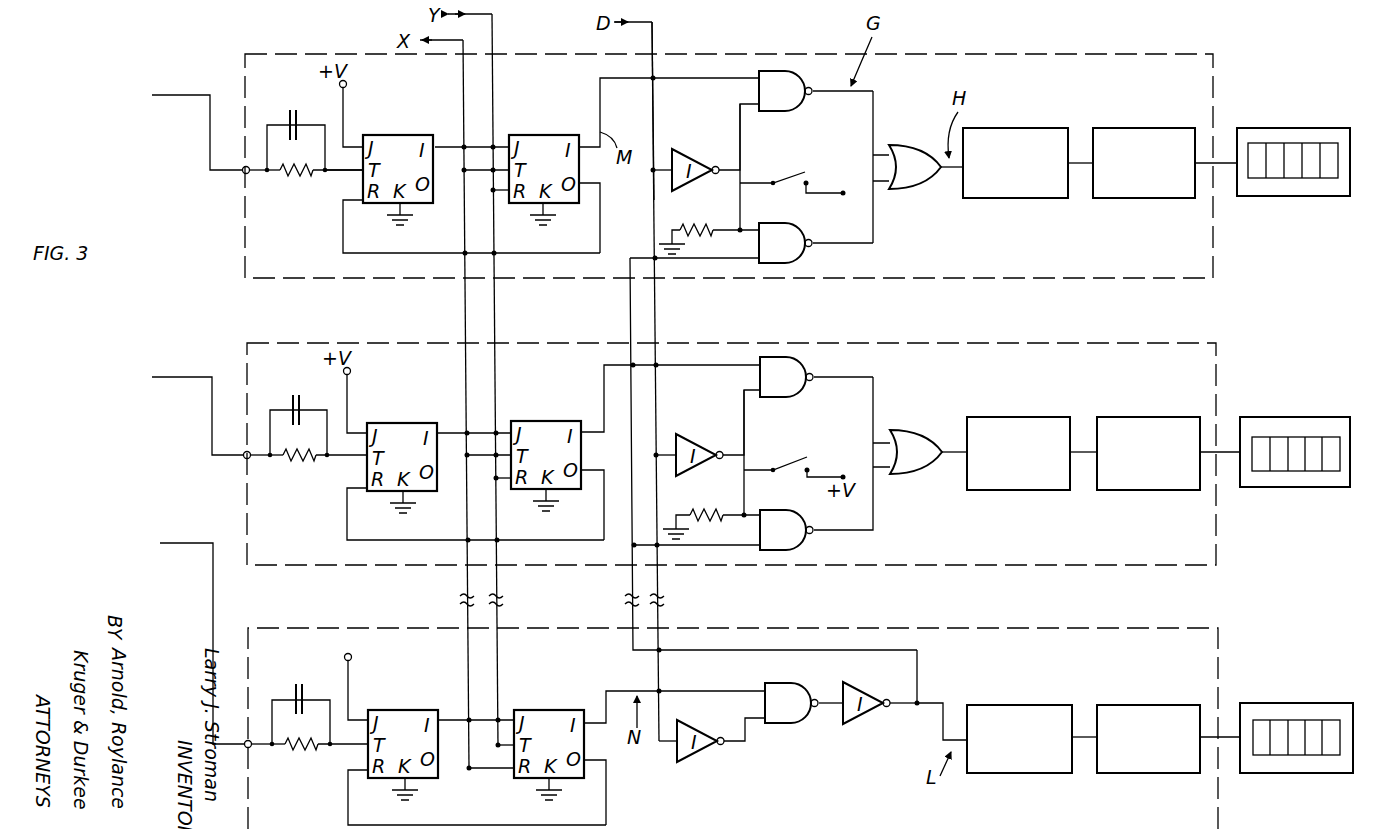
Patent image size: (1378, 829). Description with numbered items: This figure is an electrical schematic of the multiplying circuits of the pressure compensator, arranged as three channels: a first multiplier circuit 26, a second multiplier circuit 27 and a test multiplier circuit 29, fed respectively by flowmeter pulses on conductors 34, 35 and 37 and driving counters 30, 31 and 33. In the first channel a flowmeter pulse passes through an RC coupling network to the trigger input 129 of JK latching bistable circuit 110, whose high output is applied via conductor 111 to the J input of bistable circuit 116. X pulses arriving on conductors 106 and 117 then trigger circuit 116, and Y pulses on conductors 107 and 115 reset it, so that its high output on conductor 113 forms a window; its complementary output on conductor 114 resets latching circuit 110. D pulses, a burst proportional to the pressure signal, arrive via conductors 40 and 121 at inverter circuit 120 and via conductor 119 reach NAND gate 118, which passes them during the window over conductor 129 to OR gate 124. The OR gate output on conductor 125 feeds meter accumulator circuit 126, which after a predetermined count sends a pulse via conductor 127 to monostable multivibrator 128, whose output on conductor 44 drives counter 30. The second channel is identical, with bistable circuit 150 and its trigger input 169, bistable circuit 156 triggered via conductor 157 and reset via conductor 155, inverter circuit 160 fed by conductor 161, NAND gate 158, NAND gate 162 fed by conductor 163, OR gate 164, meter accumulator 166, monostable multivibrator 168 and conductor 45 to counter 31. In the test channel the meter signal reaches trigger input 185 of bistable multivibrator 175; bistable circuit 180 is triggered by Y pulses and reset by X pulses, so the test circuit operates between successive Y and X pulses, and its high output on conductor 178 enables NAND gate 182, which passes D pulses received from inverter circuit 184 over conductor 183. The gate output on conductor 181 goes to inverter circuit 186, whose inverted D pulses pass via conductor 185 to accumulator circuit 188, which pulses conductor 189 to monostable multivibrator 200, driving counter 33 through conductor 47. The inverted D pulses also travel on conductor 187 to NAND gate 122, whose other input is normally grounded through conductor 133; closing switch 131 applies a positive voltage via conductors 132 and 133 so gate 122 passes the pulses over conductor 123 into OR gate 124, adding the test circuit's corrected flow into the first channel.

The first multiplier circuit 26 is at (245, 244).
The second multiplier circuit 27 is at (247, 353).
The test multiplier circuit 29 is at (262, 628).
The counter 30 is at (1296, 127).
The counter 31 is at (1298, 415).
The counter 33 is at (1302, 702).
The conductor 34 is at (172, 95).
The conductor 35 is at (175, 377).
The conductor 37 is at (178, 543).
The conductor 40 is at (656, 46).
The conductor 44 is at (1227, 160).
The conductor 45 is at (1229, 450).
The conductor 47 is at (1228, 735).
The conductor 106 is at (464, 84).
The conductor 107 is at (493, 84).
The bistable circuit 110 is at (391, 133).
The conductor 111 is at (451, 145).
The conductor 113 is at (628, 80).
The conductor 114 is at (600, 226).
The conductor 115 is at (501, 193).
The bistable circuit 116 is at (544, 133).
The conductor 117 is at (479, 174).
The NAND gate 118 is at (804, 82).
The conductor 119 is at (741, 153).
The inverter circuit 120 is at (699, 154).
The conductor 121 is at (665, 170).
The NAND gate 122 is at (810, 258).
The conductor 123 is at (875, 236).
The OR gate 124 is at (908, 148).
The conductor 125 is at (951, 172).
The meter accumulator circuit 126 is at (1010, 127).
The conductor 127 is at (1084, 160).
The monostable multivibrator 128 is at (1136, 127).
The trigger input / conductor 129 is at (345, 172).
The switch 131 is at (795, 170).
The conductor 132 is at (827, 193).
The conductor 133 is at (726, 230).
The bistable circuit 150 is at (405, 421).
The conductor 155 is at (505, 482).
The bistable circuit 156 is at (545, 420).
The conductor 157 is at (481, 458).
The NAND gate 158 is at (808, 370).
The inverter circuit 160 is at (699, 439).
The conductor 161 is at (665, 455).
The NAND gate 162 is at (809, 528).
The conductor 163 is at (731, 549).
The OR gate 164 is at (912, 432).
The meter accumulator circuit 166 is at (1028, 415).
The monostable multivibrator 168 is at (1150, 415).
The trigger input 169 is at (346, 458).
The bistable multivibrator 175 is at (406, 708).
The conductor 178 is at (621, 690).
The bistable circuit 180 is at (550, 708).
The conductor 181 is at (827, 700).
The NAND gate 182 is at (790, 726).
The conductor 183 is at (751, 733).
The inverter circuit 184 is at (705, 756).
The trigger input / conductor 185 is at (348, 747).
The inverter circuit 186 is at (869, 725).
The conductor 187 is at (630, 266).
The accumulator circuit 188 is at (1020, 703).
The conductor 189 is at (1087, 740).
The monostable multivibrator 200 is at (1148, 703).